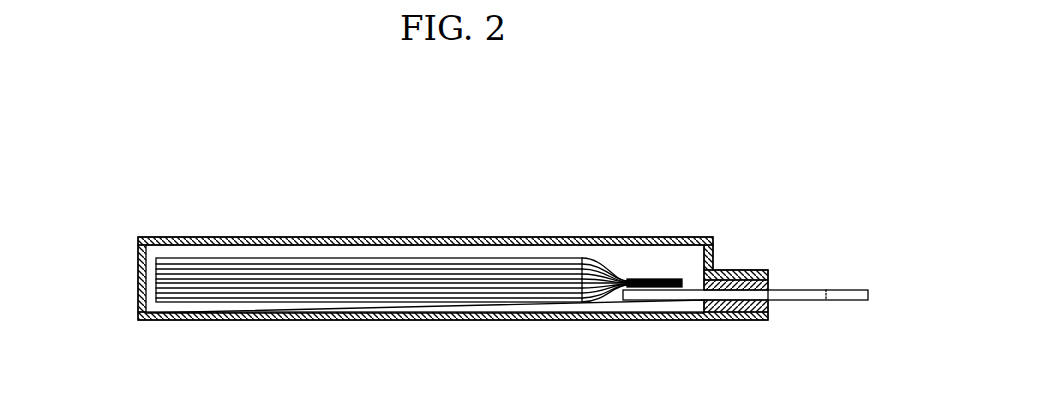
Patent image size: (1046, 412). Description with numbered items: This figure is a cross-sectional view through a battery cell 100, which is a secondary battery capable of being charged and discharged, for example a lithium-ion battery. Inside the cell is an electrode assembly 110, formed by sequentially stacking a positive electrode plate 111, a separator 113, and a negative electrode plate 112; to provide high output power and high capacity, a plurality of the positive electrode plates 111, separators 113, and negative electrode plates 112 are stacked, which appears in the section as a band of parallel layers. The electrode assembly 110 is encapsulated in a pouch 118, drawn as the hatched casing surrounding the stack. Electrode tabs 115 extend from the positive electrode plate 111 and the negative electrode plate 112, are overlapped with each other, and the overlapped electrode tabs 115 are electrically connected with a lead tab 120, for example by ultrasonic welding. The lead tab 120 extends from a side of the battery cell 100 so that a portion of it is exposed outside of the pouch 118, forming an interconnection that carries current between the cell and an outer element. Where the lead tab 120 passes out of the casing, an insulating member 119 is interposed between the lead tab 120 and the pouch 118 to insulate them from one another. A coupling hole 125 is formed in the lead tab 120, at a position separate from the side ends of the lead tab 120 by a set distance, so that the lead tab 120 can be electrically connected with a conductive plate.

The battery cell 100 is at (708, 148).
The electrode assembly 110 is at (397, 270).
The positive electrode plate 111 is at (143, 252).
The negative electrode plate 112 is at (423, 294).
The separator 113 is at (148, 261).
The electrode tabs 115 is at (604, 272).
The pouch 118 is at (204, 237).
The insulating member 119 is at (752, 312).
The lead tab 120 is at (853, 301).
The coupling hole 125 is at (829, 297).